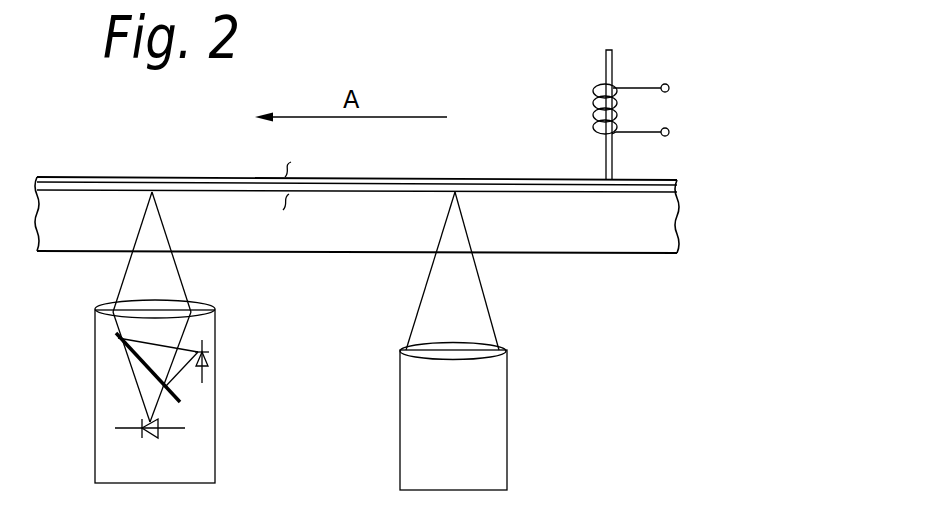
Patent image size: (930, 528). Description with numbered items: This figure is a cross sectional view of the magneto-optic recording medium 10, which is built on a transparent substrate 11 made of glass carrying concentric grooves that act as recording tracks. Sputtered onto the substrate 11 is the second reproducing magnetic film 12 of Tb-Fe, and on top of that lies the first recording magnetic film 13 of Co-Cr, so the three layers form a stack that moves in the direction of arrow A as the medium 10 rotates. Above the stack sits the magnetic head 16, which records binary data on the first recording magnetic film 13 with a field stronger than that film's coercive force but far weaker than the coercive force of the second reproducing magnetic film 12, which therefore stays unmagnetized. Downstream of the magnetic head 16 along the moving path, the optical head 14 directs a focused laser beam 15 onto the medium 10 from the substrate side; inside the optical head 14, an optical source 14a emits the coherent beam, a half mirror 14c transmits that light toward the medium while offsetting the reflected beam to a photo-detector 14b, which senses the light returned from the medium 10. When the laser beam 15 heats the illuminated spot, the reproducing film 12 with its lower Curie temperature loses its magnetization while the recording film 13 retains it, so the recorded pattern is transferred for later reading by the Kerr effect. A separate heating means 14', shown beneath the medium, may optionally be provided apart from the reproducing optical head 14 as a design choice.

The recording medium 10 is at (429, 188).
The transparent substrate 11 is at (400, 236).
The second reproducing magnetic film 12 is at (678, 190).
The first recording magnetic film 13 is at (678, 180).
The optical head 14 is at (161, 339).
The optical source 14a is at (148, 439).
The photo-detector 14b is at (210, 347).
The half mirror 14c is at (122, 340).
The heating means 14' is at (492, 341).
The laser beam 15 is at (190, 289).
The magnetic head 16 is at (612, 62).